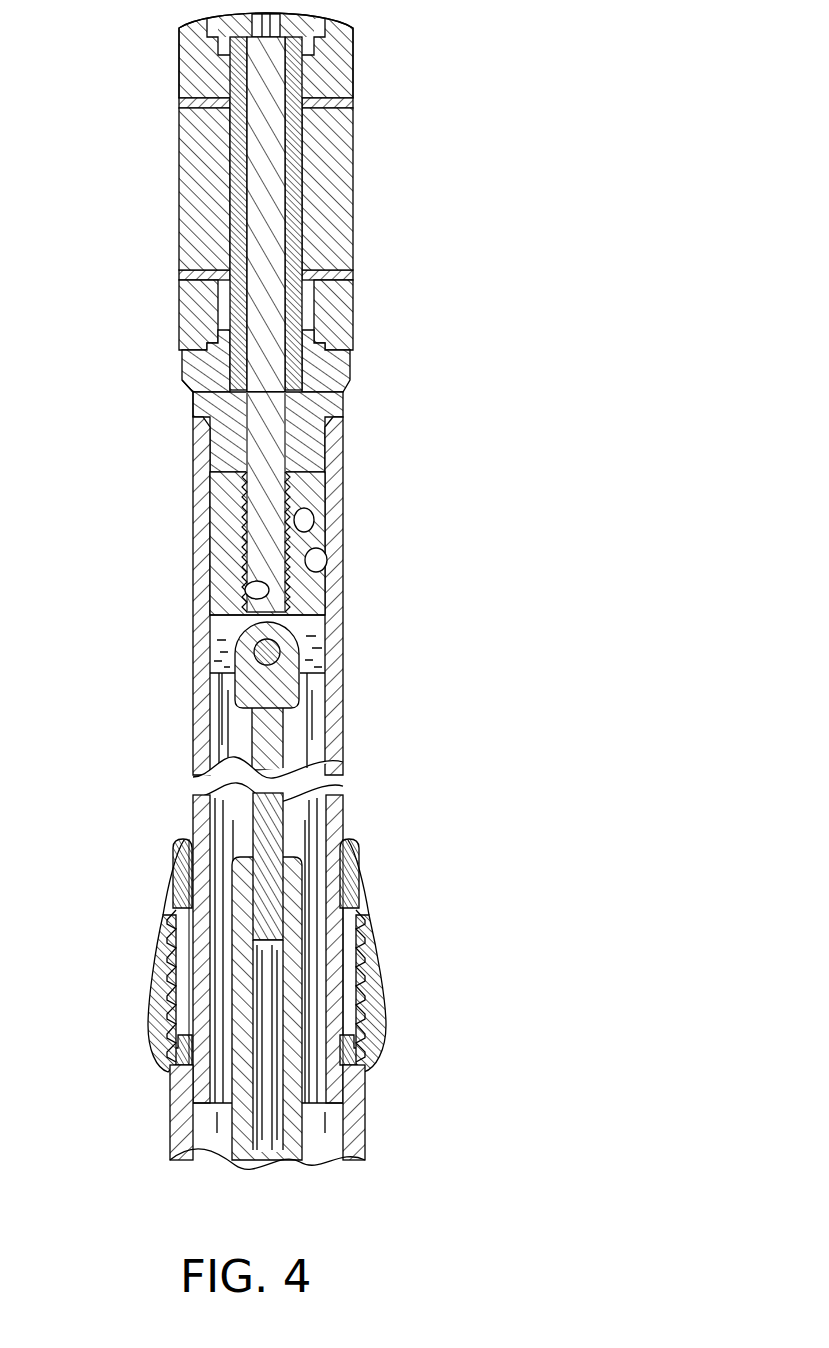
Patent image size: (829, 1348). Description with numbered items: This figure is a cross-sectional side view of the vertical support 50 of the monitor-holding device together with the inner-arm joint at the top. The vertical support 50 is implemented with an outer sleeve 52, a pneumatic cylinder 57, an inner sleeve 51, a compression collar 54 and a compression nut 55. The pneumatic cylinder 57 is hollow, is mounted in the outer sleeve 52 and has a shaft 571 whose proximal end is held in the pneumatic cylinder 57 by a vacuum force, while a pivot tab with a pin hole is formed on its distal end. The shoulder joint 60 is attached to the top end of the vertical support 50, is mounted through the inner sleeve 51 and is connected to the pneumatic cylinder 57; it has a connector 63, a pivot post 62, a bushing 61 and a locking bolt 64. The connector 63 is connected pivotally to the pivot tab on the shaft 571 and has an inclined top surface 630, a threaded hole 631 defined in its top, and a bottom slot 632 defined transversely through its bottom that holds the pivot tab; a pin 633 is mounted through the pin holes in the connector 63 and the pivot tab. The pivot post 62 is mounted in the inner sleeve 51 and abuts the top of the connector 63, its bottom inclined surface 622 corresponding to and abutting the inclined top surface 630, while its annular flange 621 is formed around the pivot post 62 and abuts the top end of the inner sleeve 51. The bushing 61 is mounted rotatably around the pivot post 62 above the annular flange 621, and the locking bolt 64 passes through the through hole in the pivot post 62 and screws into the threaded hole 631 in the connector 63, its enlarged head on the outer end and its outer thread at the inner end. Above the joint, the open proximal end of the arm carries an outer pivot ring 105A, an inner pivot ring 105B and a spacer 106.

The outer pivot ring 105A is at (345, 56).
The inner pivot ring 105B is at (345, 327).
The spacer 106 is at (340, 203).
The locking bolt 64 is at (278, 112).
The bushing 61 is at (350, 378).
The annular flange 621 is at (193, 394).
The shoulder joint 60 is at (215, 462).
The pivot post 62 is at (290, 452).
The inclined top surface 630 is at (283, 503).
The connector 63 is at (228, 568).
The bottom inclined surface 622 is at (320, 568).
The threaded hole 631 is at (248, 600).
The bottom slot 632 is at (312, 652).
The pin 633 is at (254, 655).
The inner sleeve 51 is at (333, 734).
The vertical support 50 is at (350, 805).
The shaft 571 is at (253, 819).
The pneumatic cylinder 57 is at (300, 1003).
The compression collar 54 is at (362, 908).
The compression nut 55 is at (382, 980).
The outer sleeve 52 is at (358, 1105).